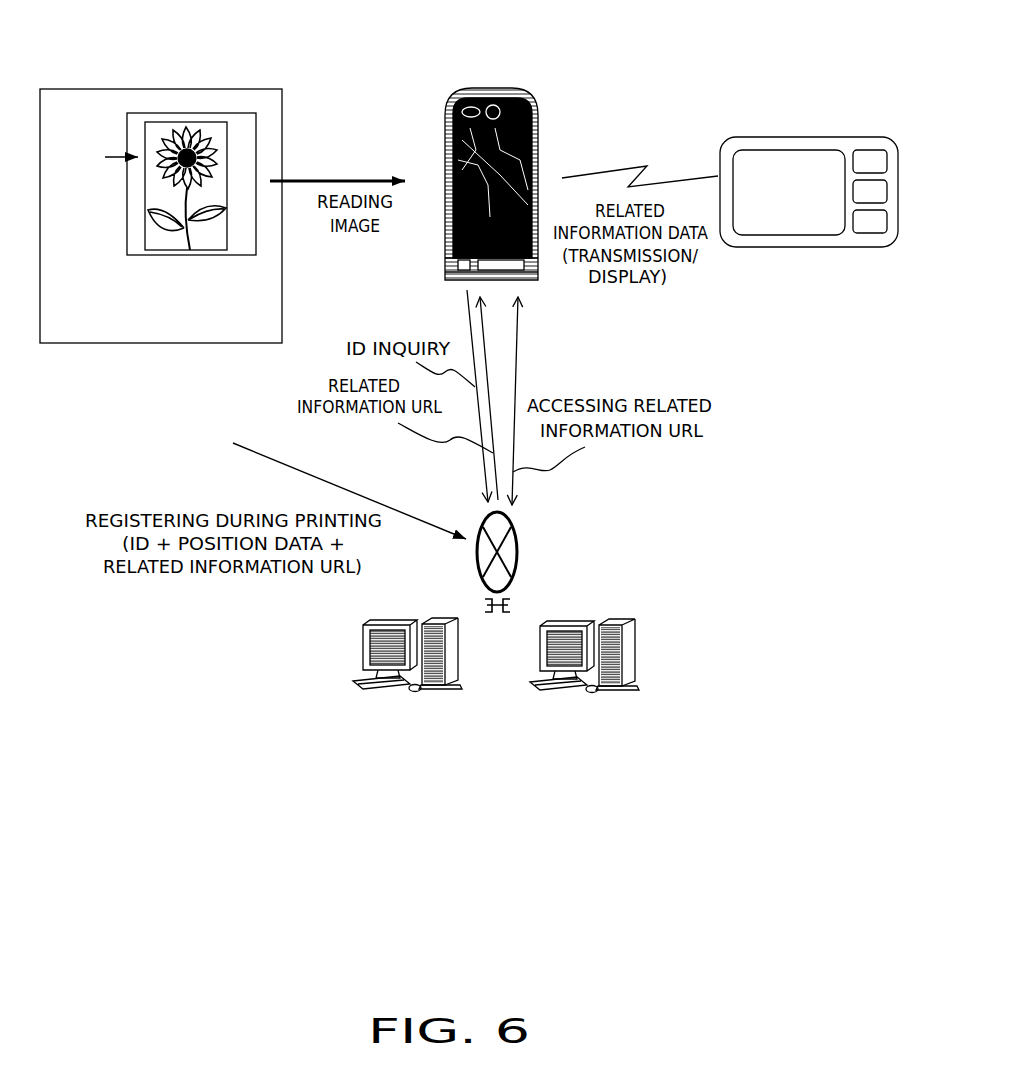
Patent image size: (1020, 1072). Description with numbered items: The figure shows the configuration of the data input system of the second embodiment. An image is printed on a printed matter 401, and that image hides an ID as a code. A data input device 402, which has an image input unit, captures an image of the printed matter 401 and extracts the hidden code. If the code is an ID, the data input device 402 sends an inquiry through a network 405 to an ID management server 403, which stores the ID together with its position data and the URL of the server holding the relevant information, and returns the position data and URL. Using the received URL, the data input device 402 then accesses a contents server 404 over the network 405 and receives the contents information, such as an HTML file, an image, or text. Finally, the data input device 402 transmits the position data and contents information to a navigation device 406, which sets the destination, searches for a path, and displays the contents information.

The printed matter 401 is at (160, 89).
The data input device 402 is at (490, 88).
The ID management server 403 is at (363, 650).
The contents server 404 is at (632, 643).
The network 405 is at (520, 545).
The navigation device 406 is at (807, 137).